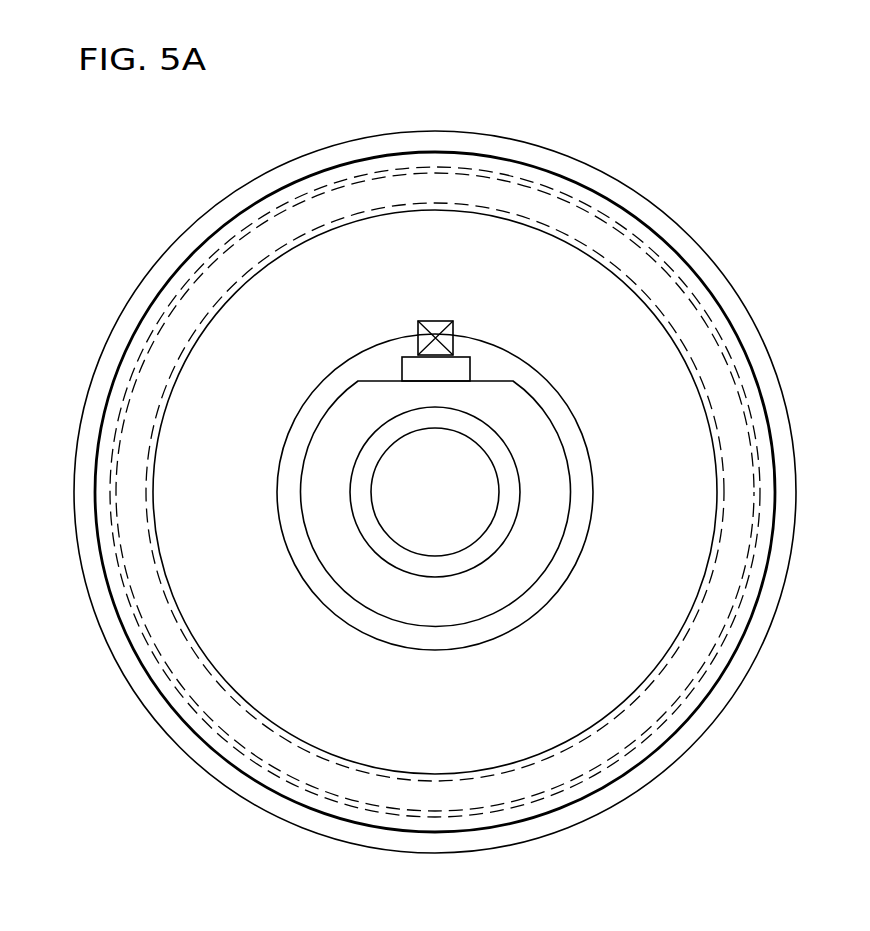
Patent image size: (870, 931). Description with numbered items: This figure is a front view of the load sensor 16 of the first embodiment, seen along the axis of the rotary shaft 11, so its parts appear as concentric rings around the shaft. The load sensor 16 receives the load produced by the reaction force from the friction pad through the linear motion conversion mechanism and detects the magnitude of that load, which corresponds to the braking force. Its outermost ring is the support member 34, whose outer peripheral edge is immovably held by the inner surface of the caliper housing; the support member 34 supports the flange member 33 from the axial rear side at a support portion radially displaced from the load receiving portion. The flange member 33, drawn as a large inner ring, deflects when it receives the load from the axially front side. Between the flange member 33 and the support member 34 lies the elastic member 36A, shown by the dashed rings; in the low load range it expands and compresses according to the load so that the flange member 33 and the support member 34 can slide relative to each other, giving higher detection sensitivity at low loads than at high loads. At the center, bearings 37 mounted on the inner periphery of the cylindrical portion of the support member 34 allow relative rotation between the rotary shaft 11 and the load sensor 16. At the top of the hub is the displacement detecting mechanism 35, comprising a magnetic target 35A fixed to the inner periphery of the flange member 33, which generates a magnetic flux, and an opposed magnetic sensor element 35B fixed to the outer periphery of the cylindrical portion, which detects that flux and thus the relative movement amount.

The load sensor 16 is at (683, 210).
The support member 34 is at (710, 270).
The elastic member 36A is at (722, 360).
The flange member 33 is at (620, 690).
The bearings 37 is at (513, 490).
The rotary shaft 11 is at (483, 515).
The displacement detecting mechanism 35 is at (409, 330).
The magnetic target 35A is at (455, 333).
The magnetic sensor element 35B is at (460, 371).